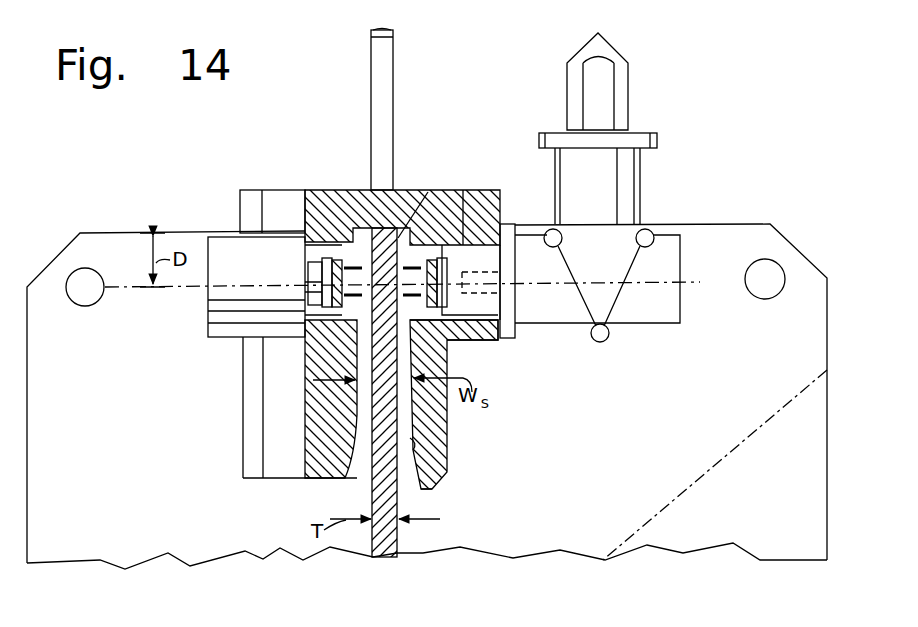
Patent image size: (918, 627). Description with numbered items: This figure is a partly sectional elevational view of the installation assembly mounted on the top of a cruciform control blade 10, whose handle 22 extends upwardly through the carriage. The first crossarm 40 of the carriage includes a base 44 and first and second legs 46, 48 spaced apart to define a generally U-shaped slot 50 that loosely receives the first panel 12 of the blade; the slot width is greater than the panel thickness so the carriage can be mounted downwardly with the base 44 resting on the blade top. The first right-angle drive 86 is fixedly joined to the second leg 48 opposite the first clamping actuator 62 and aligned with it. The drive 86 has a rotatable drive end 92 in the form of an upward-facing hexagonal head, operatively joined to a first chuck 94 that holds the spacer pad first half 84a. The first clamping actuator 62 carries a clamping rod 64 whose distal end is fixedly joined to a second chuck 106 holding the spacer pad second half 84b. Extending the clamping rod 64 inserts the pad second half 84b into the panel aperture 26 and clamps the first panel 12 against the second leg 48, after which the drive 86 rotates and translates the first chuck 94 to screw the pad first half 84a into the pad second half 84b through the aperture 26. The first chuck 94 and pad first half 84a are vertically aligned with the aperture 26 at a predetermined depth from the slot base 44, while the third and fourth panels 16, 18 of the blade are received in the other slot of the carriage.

The cruciform control rod or blade 10 is at (396, 84).
The first panel 12 is at (398, 538).
The third panel 16 is at (827, 418).
The fourth panel 18 is at (25, 522).
The handle 22 is at (376, 29).
The aperture 26 is at (782, 266).
The first crossarm 40 is at (450, 428).
The base 44 is at (400, 226).
The first leg 46 is at (356, 476).
The second leg 48 is at (428, 488).
The first generally U-shaped slot 50 is at (428, 457).
The first clamping actuator 62 is at (240, 274).
The clamping rod 64 is at (326, 291).
The spacer pad first half 84a is at (430, 343).
The spacer pad second half 84b is at (338, 250).
The first right-angle drive 86 is at (650, 203).
The drive end 92 is at (628, 95).
The first chuck 94 is at (456, 240).
The second chuck 106 is at (308, 316).